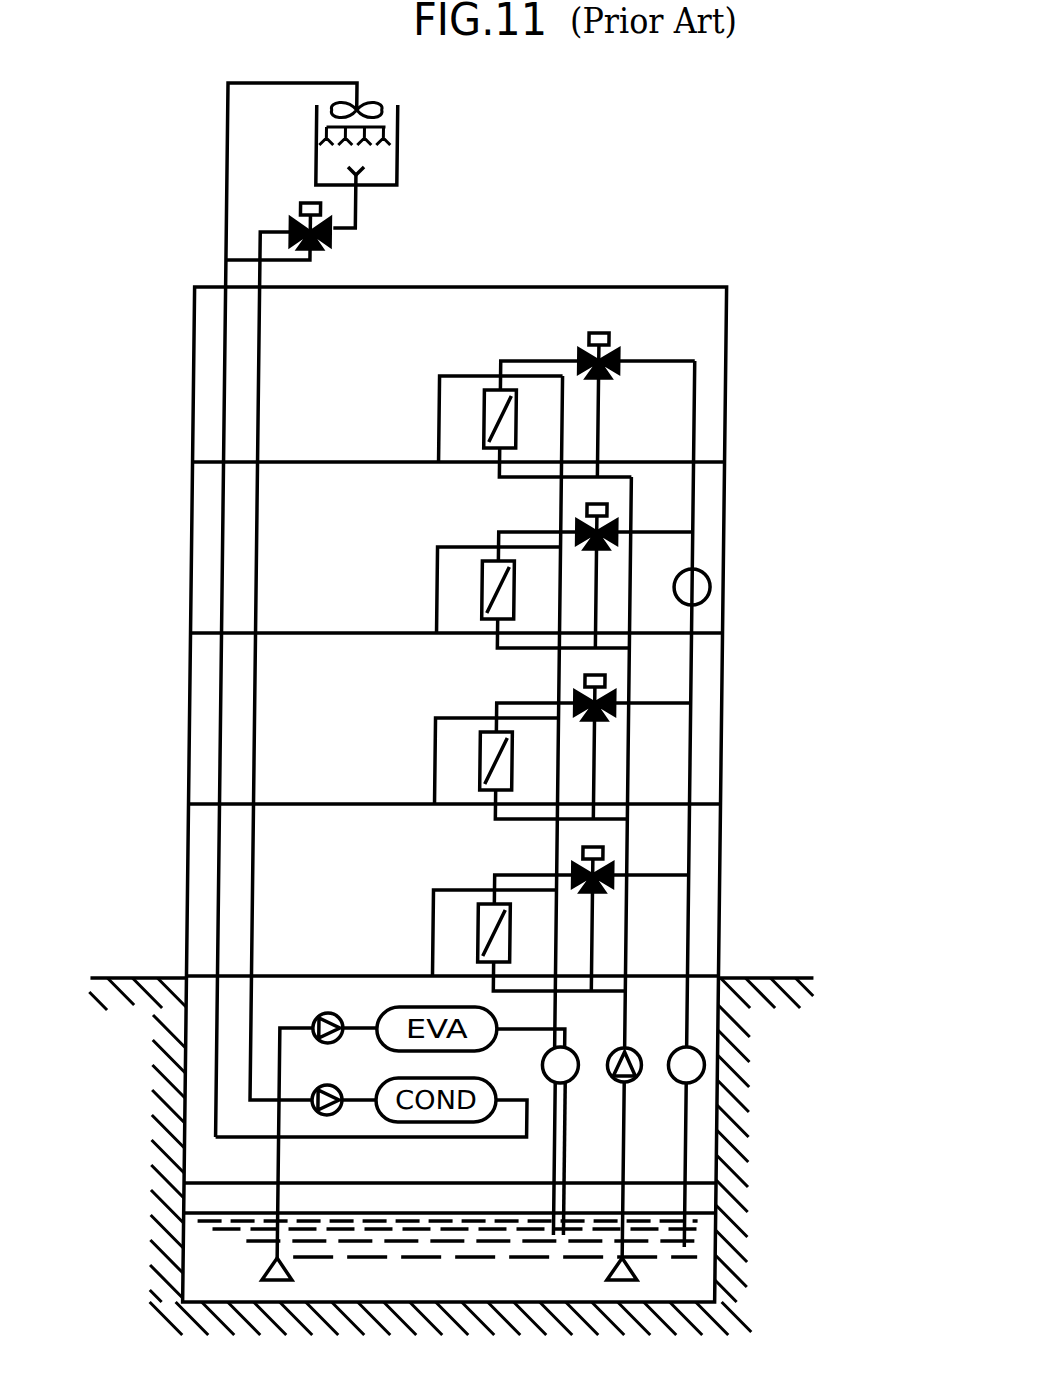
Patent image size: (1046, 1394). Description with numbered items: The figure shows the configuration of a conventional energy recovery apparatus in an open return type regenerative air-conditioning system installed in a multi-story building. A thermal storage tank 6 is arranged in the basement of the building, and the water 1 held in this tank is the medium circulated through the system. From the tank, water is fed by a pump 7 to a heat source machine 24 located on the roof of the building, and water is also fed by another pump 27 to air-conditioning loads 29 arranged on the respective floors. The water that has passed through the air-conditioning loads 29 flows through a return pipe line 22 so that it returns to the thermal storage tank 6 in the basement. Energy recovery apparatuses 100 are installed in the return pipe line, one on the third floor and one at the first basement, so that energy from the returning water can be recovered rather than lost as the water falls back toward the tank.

The water storage tank 1 is at (486, 1294).
The thermal storage tank 6 is at (695, 1281).
The pump 7 is at (352, 1083).
The return pipe line 22 is at (568, 1162).
The heat source machine 24 is at (399, 157).
The pump 27 is at (650, 1079).
The air-conditioning load 29 is at (444, 935).
The energy recovery apparatus 100 is at (717, 587).